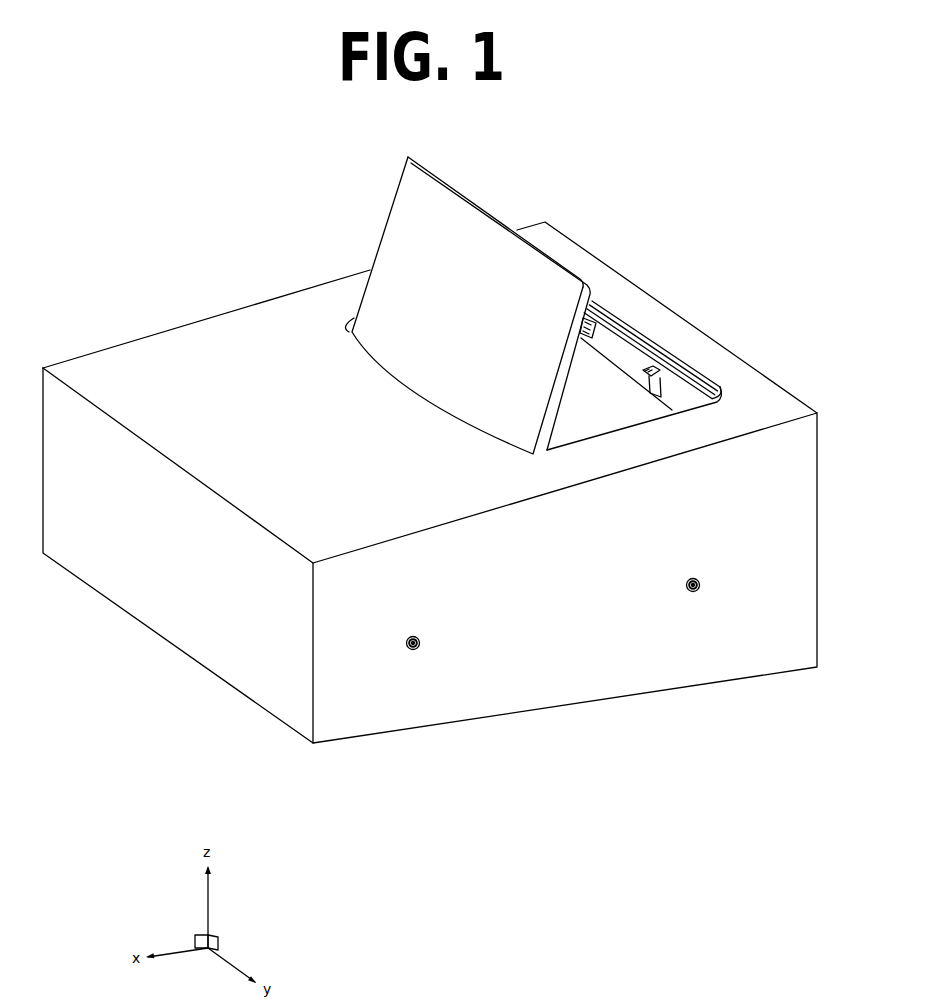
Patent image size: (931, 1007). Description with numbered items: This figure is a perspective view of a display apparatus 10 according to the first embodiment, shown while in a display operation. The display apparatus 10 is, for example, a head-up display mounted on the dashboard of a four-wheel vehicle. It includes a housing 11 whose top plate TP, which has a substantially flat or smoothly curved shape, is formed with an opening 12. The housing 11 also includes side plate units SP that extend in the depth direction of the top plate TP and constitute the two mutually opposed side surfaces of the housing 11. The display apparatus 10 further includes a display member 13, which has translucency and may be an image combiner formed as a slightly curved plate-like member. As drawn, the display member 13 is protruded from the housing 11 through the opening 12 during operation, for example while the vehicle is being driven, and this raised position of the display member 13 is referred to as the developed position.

The display apparatus 10 is at (158, 249).
The housing 11 is at (418, 514).
The opening 12 is at (593, 363).
The display member 13 is at (400, 242).